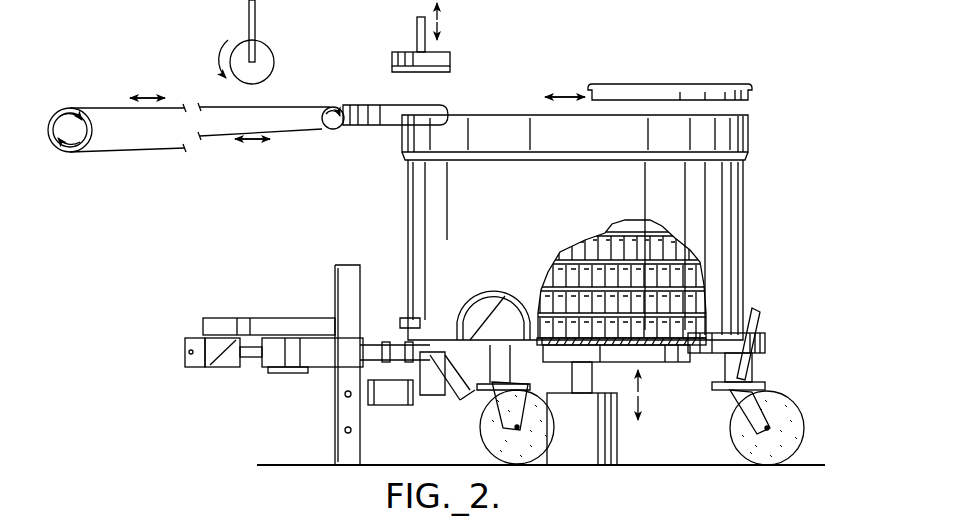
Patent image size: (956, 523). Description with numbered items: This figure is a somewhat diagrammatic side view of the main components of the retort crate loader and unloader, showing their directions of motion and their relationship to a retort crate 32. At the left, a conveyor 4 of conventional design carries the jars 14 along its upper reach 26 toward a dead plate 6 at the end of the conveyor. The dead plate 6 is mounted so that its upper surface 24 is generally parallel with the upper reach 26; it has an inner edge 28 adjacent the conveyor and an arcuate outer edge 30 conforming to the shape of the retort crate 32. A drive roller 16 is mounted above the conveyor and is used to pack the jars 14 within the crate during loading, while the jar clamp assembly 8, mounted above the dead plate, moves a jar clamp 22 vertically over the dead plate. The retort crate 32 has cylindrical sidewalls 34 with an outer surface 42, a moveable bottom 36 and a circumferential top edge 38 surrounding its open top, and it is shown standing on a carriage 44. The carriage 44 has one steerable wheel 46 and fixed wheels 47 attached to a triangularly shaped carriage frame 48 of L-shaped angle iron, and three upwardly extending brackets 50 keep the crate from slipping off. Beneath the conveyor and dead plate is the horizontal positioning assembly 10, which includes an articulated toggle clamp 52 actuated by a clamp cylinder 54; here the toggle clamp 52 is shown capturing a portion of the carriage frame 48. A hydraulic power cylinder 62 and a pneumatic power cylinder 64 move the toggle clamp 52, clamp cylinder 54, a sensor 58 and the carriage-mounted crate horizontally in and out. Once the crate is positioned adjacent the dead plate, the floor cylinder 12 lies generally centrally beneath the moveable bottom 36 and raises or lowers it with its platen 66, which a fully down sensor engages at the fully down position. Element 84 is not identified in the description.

The conveyor 4 is at (75, 106).
The dead plate 6 is at (372, 100).
The jar clamp assembly 8 is at (452, 23).
The horizontal positioning assembly 10 is at (228, 418).
The floor cylinder 12 is at (604, 446).
The jars 14 is at (655, 250).
The drive roller 16 is at (248, 40).
The jar clamp 22 is at (445, 52).
The upper surface 24 is at (410, 104).
The upper reach 26 is at (175, 107).
The inner edge 28 is at (340, 108).
The arcuate outer edge 30 is at (448, 113).
The retort crate 32 is at (752, 189).
The cylindrical sidewalls 34 is at (727, 218).
The moveable bottom 36 is at (648, 355).
The circumferential top edge 38 is at (749, 117).
The outer surface 42 is at (742, 166).
The carriage 44 is at (772, 331).
The steerable wheel 46 is at (786, 408).
The fixed wheels 47 is at (527, 467).
The carriage frame 48 is at (484, 392).
The brackets 50 is at (478, 292).
The articulated toggle clamp 52 is at (462, 400).
The clamp cylinder 54 is at (410, 405).
The sensor 58 is at (412, 300).
The hydraulic power cylinder 62 is at (308, 345).
The pneumatic power cylinder 64 is at (208, 340).
The floor cylinder platen 66 is at (563, 352).
The lid 84 is at (766, 78).